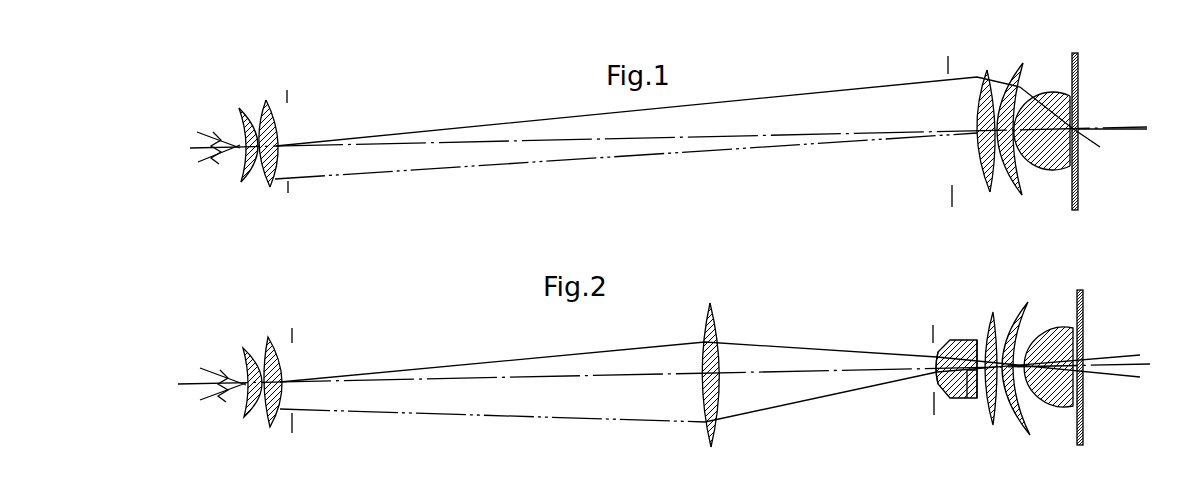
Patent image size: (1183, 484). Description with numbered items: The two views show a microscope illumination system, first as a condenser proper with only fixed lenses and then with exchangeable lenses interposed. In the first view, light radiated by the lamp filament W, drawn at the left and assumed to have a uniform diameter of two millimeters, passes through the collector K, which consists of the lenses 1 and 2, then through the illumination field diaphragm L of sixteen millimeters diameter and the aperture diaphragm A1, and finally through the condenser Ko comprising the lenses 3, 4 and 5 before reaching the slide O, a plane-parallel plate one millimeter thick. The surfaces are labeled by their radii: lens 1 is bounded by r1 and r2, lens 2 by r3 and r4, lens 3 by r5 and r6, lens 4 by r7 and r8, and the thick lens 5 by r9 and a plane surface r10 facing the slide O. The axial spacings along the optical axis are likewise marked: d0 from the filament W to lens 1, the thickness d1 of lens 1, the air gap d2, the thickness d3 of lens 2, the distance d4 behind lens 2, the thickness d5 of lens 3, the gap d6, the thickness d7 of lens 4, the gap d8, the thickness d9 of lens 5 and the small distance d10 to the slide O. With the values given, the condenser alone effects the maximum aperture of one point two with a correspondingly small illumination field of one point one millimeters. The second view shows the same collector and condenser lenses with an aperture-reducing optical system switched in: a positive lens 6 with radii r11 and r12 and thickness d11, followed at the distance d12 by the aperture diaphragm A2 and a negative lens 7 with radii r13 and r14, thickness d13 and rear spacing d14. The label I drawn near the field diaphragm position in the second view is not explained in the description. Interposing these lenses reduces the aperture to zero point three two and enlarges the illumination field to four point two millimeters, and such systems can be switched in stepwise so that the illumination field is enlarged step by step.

In FIG. 1, the lens 1 is at (245, 178).
In FIG. 1, the lens 2 is at (268, 187).
In FIG. 1, the lens 3 is at (983, 178).
In FIG. 1, the lens 4 is at (1023, 190).
In FIG. 1, the lens 5 is at (1057, 170).
In FIG. 2, the positive lens 6 is at (714, 432).
In FIG. 2, the negative lens 7 is at (960, 398).
In FIG. 1, the collector K is at (287, 264).
In FIG. 1, the condenser Ko is at (1080, 250).
In FIG. 1, the slide O is at (1080, 191).
In FIG. 1, the lamp filament W is at (230, 148).
In FIG. 1, the illumination field diaphragm L is at (290, 188).
In FIG. 2, the stop I is at (507, 311).
In FIG. 1, the aperture diaphragm A1 is at (950, 198).
In FIG. 2, the aperture diaphragm A2 is at (933, 405).
In FIG. 1, the radius r1 is at (238, 112).
In FIG. 1, the radius r2 is at (247, 116).
In FIG. 1, the radius r3 is at (262, 103).
In FIG. 1, the radius r4 is at (271, 107).
In FIG. 1, the radius r5 is at (985, 77).
In FIG. 1, the radius r6 is at (993, 78).
In FIG. 1, the radius r7 is at (1009, 80).
In FIG. 1, the radius r8 is at (1024, 70).
In FIG. 1, the radius r9 is at (1050, 92).
In FIG. 1, the radius r10 is at (1074, 95).
In FIG. 2, the radius r11 is at (705, 318).
In FIG. 2, the radius r12 is at (719, 338).
In FIG. 2, the radius r13 is at (934, 358).
In FIG. 2, the radius r14 is at (983, 345).
In FIG. 1, the axial distance d0 is at (236, 152).
In FIG. 1, the axial distance d1 is at (250, 152).
In FIG. 1, the axial distance d2 is at (262, 152).
In FIG. 1, the axial distance d3 is at (274, 153).
In FIG. 1, the axial distance d4 is at (278, 147).
In FIG. 1, the axial distance d5 is at (977, 137).
In FIG. 1, the axial distance d6 is at (998, 135).
In FIG. 1, the axial distance d7 is at (1006, 140).
In FIG. 1, the axial distance d8 is at (1012, 145).
In FIG. 1, the axial distance d9 is at (1077, 142).
In FIG. 1, the axial distance d10 is at (1078, 127).
In FIG. 2, the axial distance d11 is at (718, 380).
In FIG. 2, the axial distance d12 is at (821, 372).
In FIG. 2, the axial distance d13 is at (978, 380).
In FIG. 2, the axial distance d14 is at (990, 395).